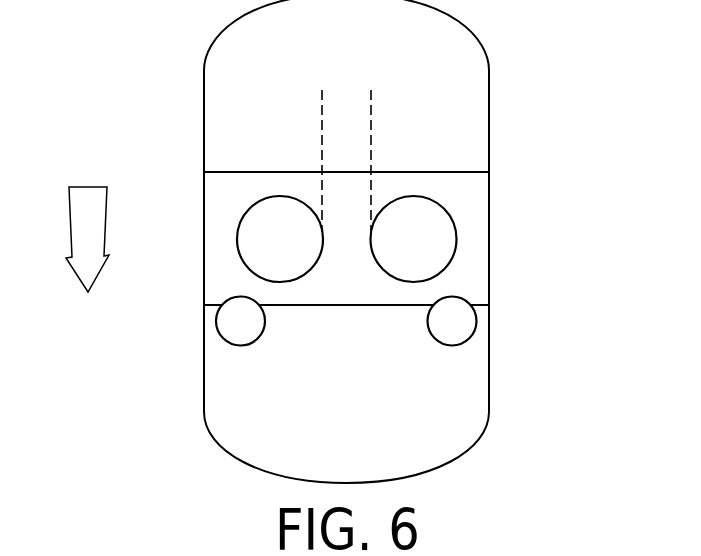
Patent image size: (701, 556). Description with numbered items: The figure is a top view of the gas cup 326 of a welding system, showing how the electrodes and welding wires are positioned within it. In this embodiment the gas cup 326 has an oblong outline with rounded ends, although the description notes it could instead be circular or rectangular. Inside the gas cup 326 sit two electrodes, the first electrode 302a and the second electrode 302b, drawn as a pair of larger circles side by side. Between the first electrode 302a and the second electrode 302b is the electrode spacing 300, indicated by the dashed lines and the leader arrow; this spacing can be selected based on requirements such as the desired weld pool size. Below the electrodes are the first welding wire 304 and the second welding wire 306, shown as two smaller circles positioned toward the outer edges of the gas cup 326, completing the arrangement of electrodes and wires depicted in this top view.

The electrode spacing 300 is at (300, 135).
The first electrode 302a is at (240, 230).
The second electrode 302b is at (457, 231).
The first welding wire 304 is at (220, 320).
The second welding wire 306 is at (472, 323).
The gas cup 326 is at (213, 436).